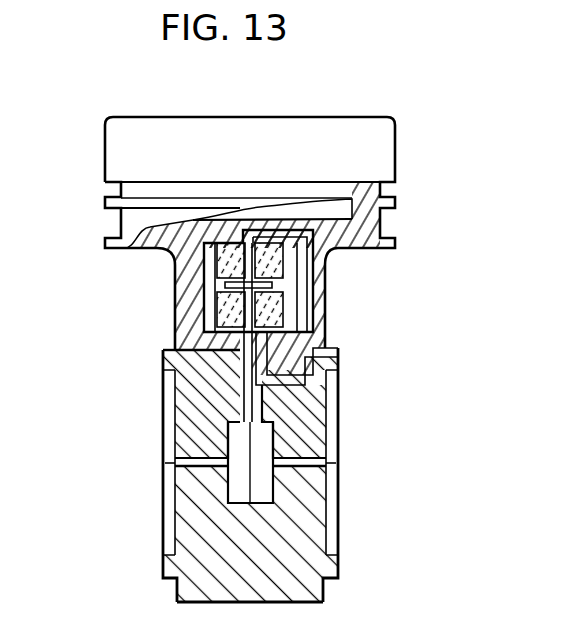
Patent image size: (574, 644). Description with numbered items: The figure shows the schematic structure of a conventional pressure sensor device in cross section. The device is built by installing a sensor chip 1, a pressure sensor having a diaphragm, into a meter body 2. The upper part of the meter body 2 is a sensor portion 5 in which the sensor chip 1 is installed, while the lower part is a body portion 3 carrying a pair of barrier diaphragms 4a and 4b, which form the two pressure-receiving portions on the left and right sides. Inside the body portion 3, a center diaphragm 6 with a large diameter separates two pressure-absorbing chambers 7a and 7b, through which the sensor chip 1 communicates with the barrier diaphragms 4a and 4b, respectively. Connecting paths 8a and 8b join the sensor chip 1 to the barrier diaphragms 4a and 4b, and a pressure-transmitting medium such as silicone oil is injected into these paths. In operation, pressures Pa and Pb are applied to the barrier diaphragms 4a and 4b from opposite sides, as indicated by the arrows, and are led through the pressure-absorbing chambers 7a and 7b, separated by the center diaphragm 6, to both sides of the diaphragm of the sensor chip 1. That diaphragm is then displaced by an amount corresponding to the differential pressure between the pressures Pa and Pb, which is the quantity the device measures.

The sensor chip 1 is at (272, 284).
The meter body 2 is at (405, 207).
The body portion 3 is at (288, 570).
The barrier diaphragm 4a is at (163, 410).
The barrier diaphragm 4b is at (340, 402).
The sensor portion 5 is at (182, 270).
The center diaphragm 6 is at (262, 440).
The pressure-absorbing chamber 7a is at (236, 487).
The pressure-absorbing chamber 7b is at (262, 492).
The connecting path 8a is at (163, 356).
The connecting path 8b is at (338, 356).
The pressure Pa is at (158, 463).
The pressure Pb is at (345, 463).